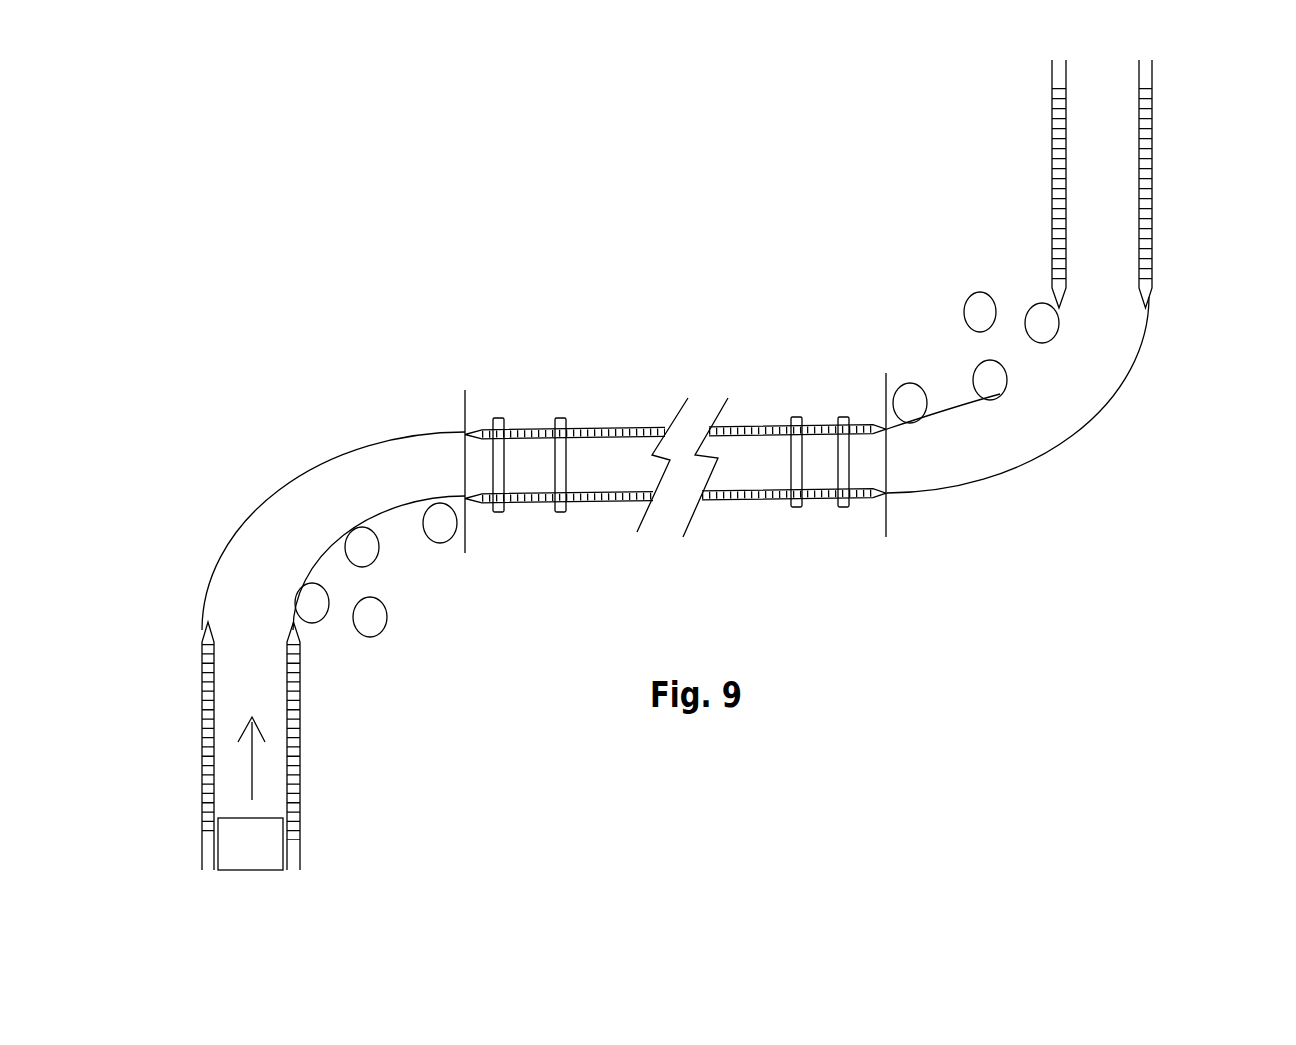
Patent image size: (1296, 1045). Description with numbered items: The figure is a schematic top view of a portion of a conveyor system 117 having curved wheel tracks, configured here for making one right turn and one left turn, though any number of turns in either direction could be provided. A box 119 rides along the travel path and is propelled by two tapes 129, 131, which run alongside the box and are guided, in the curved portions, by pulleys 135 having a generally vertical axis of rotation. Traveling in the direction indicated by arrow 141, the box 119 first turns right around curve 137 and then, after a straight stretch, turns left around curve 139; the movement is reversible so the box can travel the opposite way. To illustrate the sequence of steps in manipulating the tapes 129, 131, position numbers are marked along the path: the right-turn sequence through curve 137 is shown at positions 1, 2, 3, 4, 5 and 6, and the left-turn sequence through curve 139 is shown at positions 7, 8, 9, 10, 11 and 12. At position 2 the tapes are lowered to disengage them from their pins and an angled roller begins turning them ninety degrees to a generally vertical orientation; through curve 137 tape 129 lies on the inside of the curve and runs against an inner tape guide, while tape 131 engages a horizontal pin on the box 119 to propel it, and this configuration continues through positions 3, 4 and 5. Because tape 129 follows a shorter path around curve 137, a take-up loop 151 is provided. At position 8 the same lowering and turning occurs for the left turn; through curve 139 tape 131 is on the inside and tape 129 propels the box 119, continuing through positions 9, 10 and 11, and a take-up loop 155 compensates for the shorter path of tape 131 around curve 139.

The conveyor system 117 is at (621, 303).
The box 119 is at (253, 852).
The tape 129 is at (297, 768).
The tape 131 is at (208, 847).
The pulleys 135 is at (313, 618).
The curve 137 is at (263, 497).
The curve 139 is at (1098, 441).
The arrow 141 is at (252, 755).
The take-up loop 151 is at (385, 624).
The take-up loop 155 is at (972, 293).
The position 1 is at (355, 697).
The position 2 is at (293, 614).
The position 3 is at (353, 623).
The position 4 is at (383, 580).
The position 5 is at (413, 568).
The position 6 is at (463, 436).
The position 7 is at (888, 483).
The position 8 is at (937, 358).
The position 9 is at (970, 347).
The position 10 is at (997, 307).
The position 11 is at (1015, 307).
The position 12 is at (998, 232).